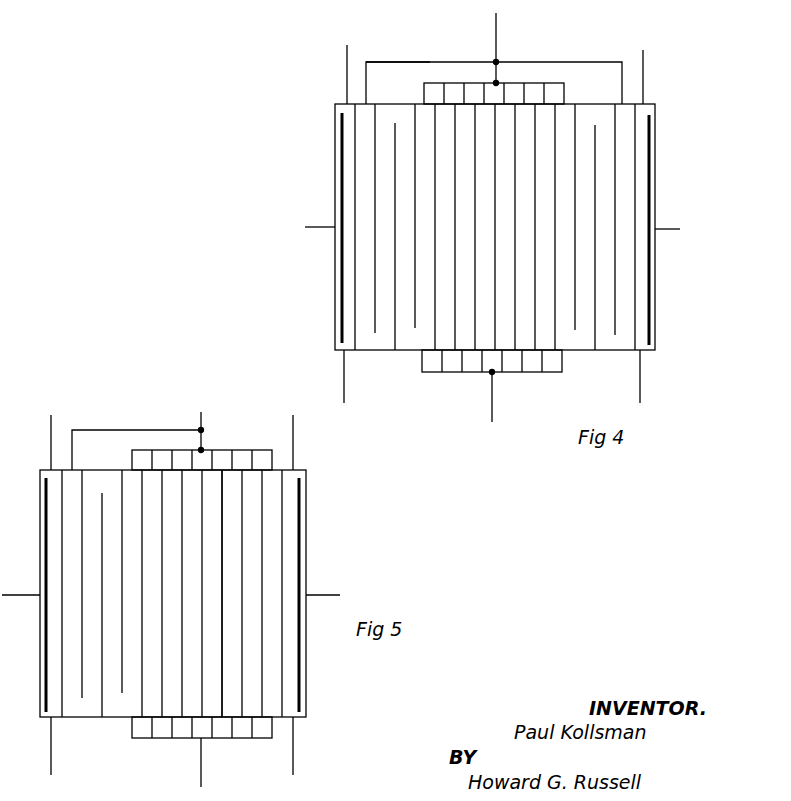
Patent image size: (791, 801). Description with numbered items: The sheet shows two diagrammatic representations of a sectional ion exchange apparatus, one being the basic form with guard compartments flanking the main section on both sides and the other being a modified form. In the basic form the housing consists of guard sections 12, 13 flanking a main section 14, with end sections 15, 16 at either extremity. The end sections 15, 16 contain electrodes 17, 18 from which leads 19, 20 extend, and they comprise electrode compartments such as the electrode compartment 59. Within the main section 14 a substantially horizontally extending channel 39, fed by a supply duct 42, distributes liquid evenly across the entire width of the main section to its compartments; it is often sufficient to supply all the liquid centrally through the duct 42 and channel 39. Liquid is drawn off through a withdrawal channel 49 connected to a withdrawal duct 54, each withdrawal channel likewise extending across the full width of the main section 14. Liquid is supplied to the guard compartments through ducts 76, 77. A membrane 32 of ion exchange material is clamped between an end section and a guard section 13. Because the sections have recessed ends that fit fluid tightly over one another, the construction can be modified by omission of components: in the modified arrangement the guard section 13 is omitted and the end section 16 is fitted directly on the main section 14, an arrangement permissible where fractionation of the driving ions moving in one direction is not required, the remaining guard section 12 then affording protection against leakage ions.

In FIG. 4, the guard section 12 is at (387, 115).
In FIG. 5, the guard section 12 is at (90, 484).
In FIG. 4, the guard section 13 is at (602, 118).
In FIG. 4, the main section 14 is at (523, 118).
In FIG. 5, the main section 14 is at (210, 484).
In FIG. 4, the end section 15 is at (332, 282).
In FIG. 5, the end section 15 is at (40, 644).
In FIG. 4, the end section 16 is at (656, 136).
In FIG. 5, the electrode 17 is at (46, 530).
In FIG. 4, the electrode 18 is at (648, 286).
In FIG. 5, the electrode 18 is at (297, 525).
In FIG. 4, the lead 19 is at (320, 226).
In FIG. 5, the lead 19 is at (22, 594).
In FIG. 4, the lead 20 is at (663, 229).
In FIG. 5, the lead 20 is at (325, 592).
In FIG. 5, the membrane 32 is at (283, 646).
In FIG. 4, the channel 39 is at (455, 90).
In FIG. 5, the channel 39 is at (243, 460).
In FIG. 4, the supply duct 42 is at (496, 40).
In FIG. 5, the supply duct 42 is at (201, 416).
In FIG. 4, the withdrawal channel 49 is at (532, 366).
In FIG. 5, the withdrawal channel 49 is at (240, 730).
In FIG. 4, the withdrawal duct 54 is at (490, 396).
In FIG. 5, the withdrawal duct 54 is at (199, 760).
In FIG. 5, the electrode compartment 59 is at (290, 683).
In FIG. 4, the duct 76 is at (426, 62).
In FIG. 5, the duct 76 is at (155, 430).
In FIG. 4, the duct 77 is at (338, 158).